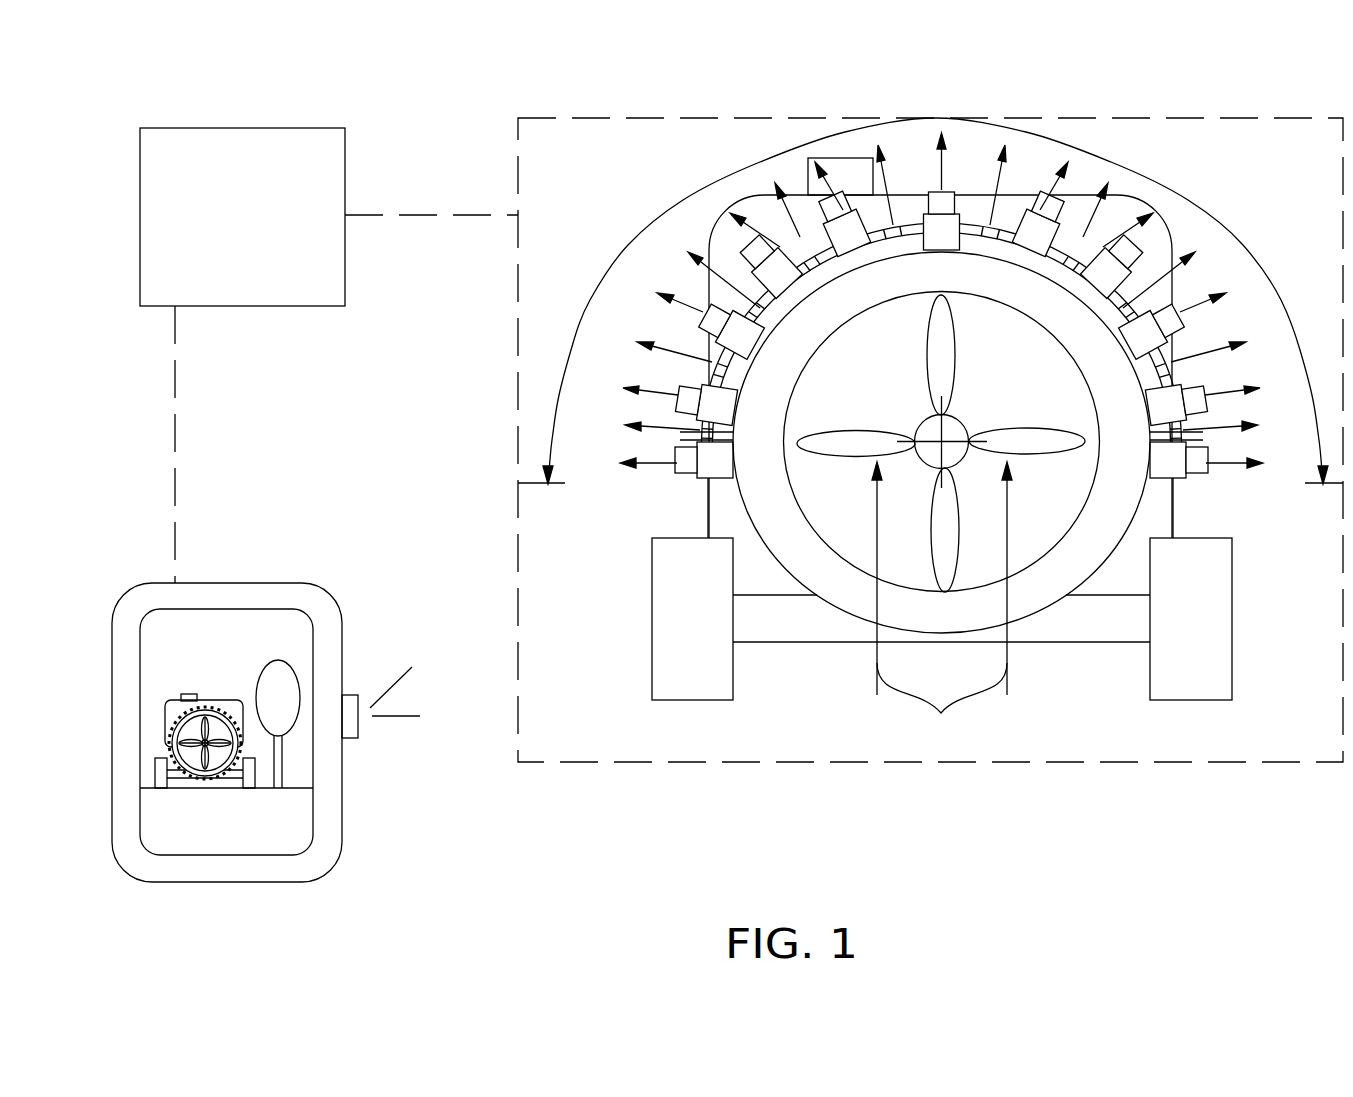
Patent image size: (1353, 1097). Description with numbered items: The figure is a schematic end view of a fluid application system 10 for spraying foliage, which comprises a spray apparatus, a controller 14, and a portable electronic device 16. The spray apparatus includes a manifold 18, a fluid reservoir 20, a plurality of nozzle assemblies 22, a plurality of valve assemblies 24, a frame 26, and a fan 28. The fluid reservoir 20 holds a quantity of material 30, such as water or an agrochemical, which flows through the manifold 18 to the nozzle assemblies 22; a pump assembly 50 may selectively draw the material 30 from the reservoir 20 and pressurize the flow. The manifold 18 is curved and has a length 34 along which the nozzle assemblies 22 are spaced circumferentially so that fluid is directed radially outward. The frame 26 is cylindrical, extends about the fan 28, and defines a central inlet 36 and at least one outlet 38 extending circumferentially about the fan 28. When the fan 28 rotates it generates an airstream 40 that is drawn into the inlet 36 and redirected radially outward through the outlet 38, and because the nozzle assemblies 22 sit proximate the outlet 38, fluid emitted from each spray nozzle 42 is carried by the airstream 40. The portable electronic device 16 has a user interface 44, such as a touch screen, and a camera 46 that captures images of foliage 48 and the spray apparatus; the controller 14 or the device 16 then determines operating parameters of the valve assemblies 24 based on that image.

The fluid application system 10 is at (168, 106).
The controller 14 is at (211, 218).
The portable electronic device 16 is at (122, 598).
The manifold 18 is at (936, 325).
The fluid reservoir 20 is at (1130, 216).
The nozzle assemblies 22 is at (664, 506).
The valve assemblies 24 is at (700, 484).
The frame 26 is at (1032, 602).
The fan 28 is at (1045, 462).
The material 30 is at (752, 243).
The length of the manifold 34 is at (1052, 120).
The central inlet 36 is at (858, 540).
The outlet 38 is at (1056, 268).
The airstream 40 is at (762, 188).
The spray nozzle 42 is at (672, 490).
The user interface 44 is at (270, 822).
The camera 46 is at (342, 740).
The foliage 48 is at (275, 660).
The pump assembly 50 is at (848, 158).